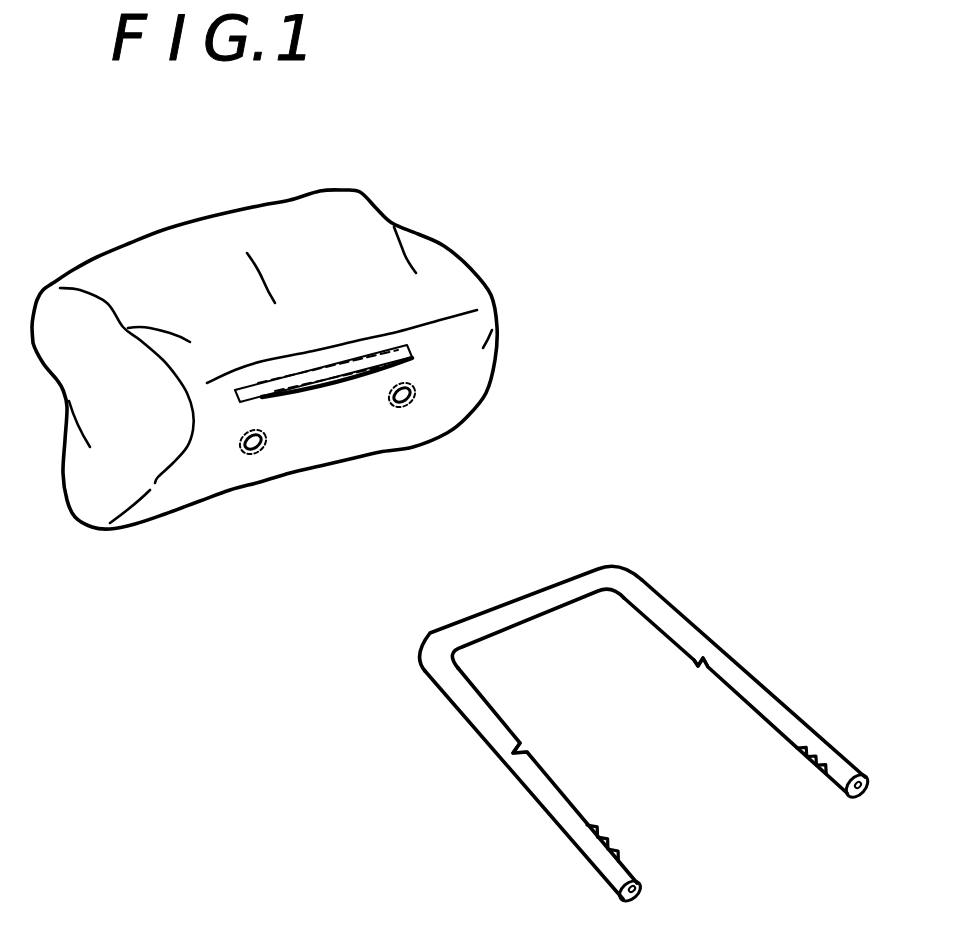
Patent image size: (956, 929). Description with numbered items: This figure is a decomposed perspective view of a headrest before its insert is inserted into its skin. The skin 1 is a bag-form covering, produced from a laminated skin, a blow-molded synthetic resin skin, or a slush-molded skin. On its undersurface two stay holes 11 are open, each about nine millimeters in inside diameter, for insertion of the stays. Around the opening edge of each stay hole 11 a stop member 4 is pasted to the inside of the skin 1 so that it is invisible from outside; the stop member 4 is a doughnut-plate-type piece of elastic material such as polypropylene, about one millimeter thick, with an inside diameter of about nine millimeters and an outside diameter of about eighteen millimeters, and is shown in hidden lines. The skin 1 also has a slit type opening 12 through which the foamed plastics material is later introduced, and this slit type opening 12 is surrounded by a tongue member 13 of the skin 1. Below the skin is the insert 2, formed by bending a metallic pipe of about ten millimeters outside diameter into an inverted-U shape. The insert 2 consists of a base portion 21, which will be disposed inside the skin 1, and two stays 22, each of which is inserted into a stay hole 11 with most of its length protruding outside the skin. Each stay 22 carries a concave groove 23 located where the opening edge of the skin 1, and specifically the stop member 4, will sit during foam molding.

The skin 1 is at (303, 190).
The insert 2 is at (646, 702).
The stop member 4 is at (417, 390).
The stay hole 11 is at (407, 405).
The slit type opening 12 is at (328, 383).
The tongue member 13 is at (278, 383).
The base portion 21 is at (553, 590).
The stay 22 is at (533, 803).
The concave groove 23 is at (527, 745).